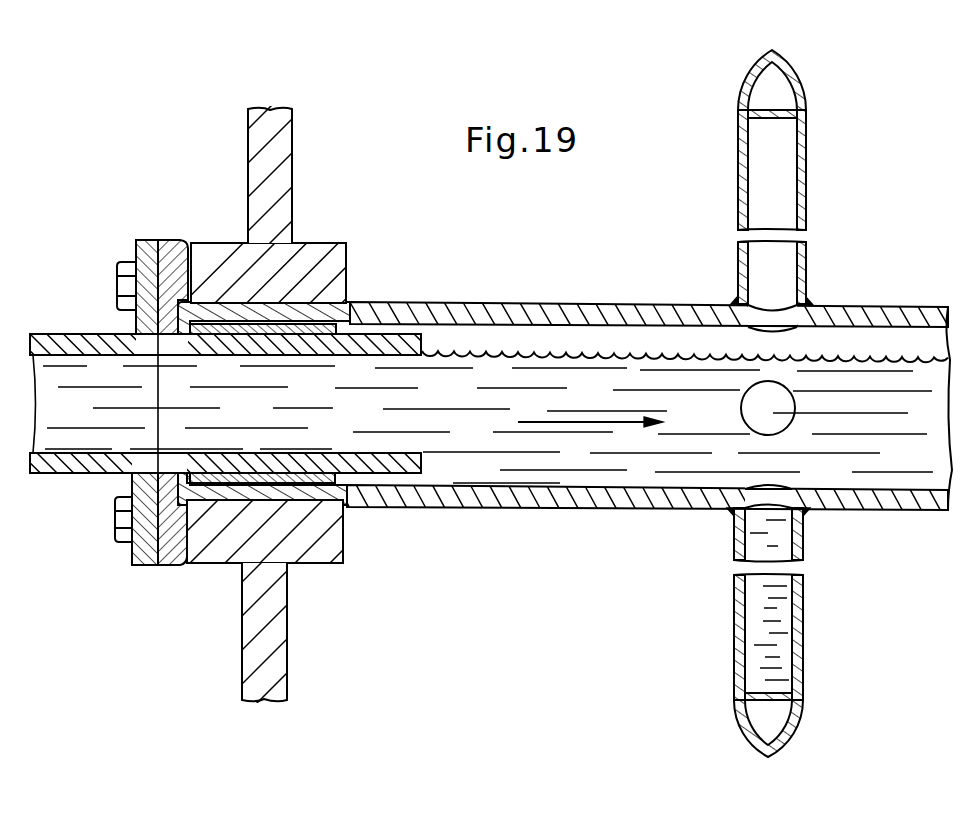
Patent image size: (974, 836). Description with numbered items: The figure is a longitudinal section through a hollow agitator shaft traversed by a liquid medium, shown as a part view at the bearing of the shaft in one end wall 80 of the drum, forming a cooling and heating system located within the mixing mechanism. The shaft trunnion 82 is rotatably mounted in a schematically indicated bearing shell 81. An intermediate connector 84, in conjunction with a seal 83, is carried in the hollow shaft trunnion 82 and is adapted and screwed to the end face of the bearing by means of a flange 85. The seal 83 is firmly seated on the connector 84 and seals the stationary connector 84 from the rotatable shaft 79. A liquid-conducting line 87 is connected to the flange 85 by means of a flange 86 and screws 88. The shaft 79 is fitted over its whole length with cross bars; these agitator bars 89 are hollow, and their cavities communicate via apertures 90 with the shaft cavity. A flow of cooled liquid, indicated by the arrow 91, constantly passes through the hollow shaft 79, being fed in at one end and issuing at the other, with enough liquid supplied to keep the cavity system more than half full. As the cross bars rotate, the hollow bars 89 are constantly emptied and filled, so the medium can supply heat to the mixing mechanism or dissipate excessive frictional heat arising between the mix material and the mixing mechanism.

The hollow agitator shaft 79 is at (558, 314).
The end wall of the drum 80 is at (268, 639).
The bearing shell 81 is at (233, 267).
The shaft trunnion 82 is at (340, 318).
The seal 83 is at (340, 326).
The intermediate connector 84 is at (387, 465).
The flange 85 is at (175, 548).
The flange 86 is at (153, 248).
The liquid-conducting line 87 is at (88, 338).
The screws 88 is at (125, 518).
The agitator bars 89 is at (741, 212).
The apertures 90 is at (732, 304).
The arrow 91 is at (586, 424).